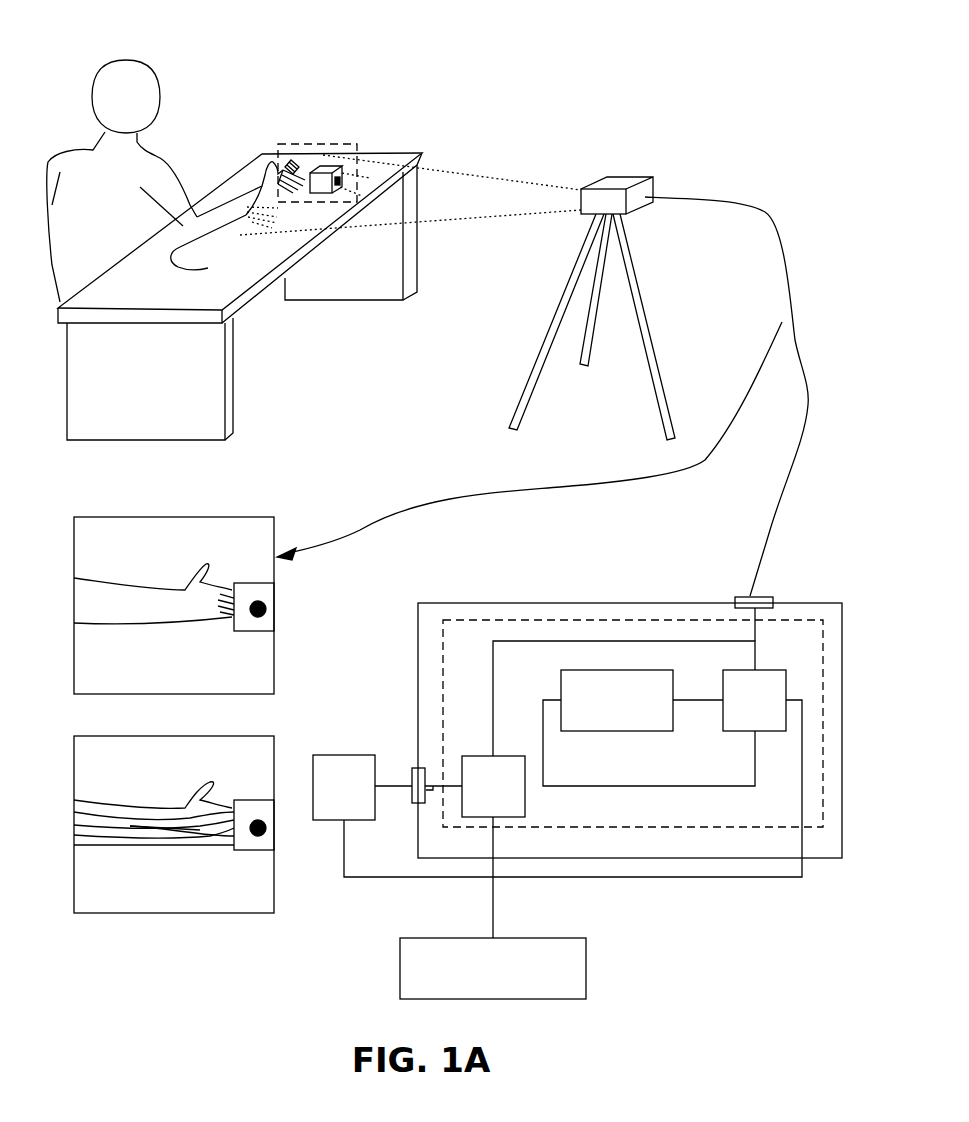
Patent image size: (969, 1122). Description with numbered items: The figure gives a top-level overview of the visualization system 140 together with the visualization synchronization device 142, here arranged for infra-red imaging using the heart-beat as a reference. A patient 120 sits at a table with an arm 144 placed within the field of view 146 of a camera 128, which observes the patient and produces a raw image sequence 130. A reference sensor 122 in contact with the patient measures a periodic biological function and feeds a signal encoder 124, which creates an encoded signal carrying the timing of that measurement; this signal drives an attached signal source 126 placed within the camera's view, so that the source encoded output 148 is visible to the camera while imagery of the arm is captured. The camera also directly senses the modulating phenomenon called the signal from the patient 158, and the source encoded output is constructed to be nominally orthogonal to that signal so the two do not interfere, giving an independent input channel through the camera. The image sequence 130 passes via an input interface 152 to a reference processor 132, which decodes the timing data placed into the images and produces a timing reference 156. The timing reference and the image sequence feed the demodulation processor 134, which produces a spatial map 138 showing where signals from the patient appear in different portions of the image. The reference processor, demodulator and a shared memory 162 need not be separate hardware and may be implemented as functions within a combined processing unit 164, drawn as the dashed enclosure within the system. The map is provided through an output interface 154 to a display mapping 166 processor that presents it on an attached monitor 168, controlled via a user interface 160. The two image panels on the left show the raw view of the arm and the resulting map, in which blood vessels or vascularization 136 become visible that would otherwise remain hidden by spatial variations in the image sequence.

The patient 120 is at (148, 57).
The reference sensor 122 is at (298, 165).
The signal encoder 124 is at (330, 166).
The signal source 126 is at (362, 178).
The camera 128 is at (617, 178).
The image sequence 130 is at (318, 530).
The reference processor 132 is at (773, 665).
The demodulation processor 134 is at (473, 752).
The vascularization 136 is at (115, 833).
The spatial map 138 is at (433, 792).
The visualization system 140 is at (463, 602).
The visualization synchronization device 142 is at (270, 148).
The arm 144 is at (208, 268).
The field of view 146 is at (512, 180).
The source encoded output 148 is at (368, 180).
The input interface 152 is at (748, 594).
The output interface 154 is at (411, 767).
The timing reference 156 is at (663, 792).
The signal from the patient 158 is at (272, 218).
The user interface 160 is at (397, 962).
The shared memory 162 is at (624, 665).
The combined processing unit 164 is at (527, 620).
The display mapping 166 is at (341, 754).
The monitor 168 is at (157, 917).